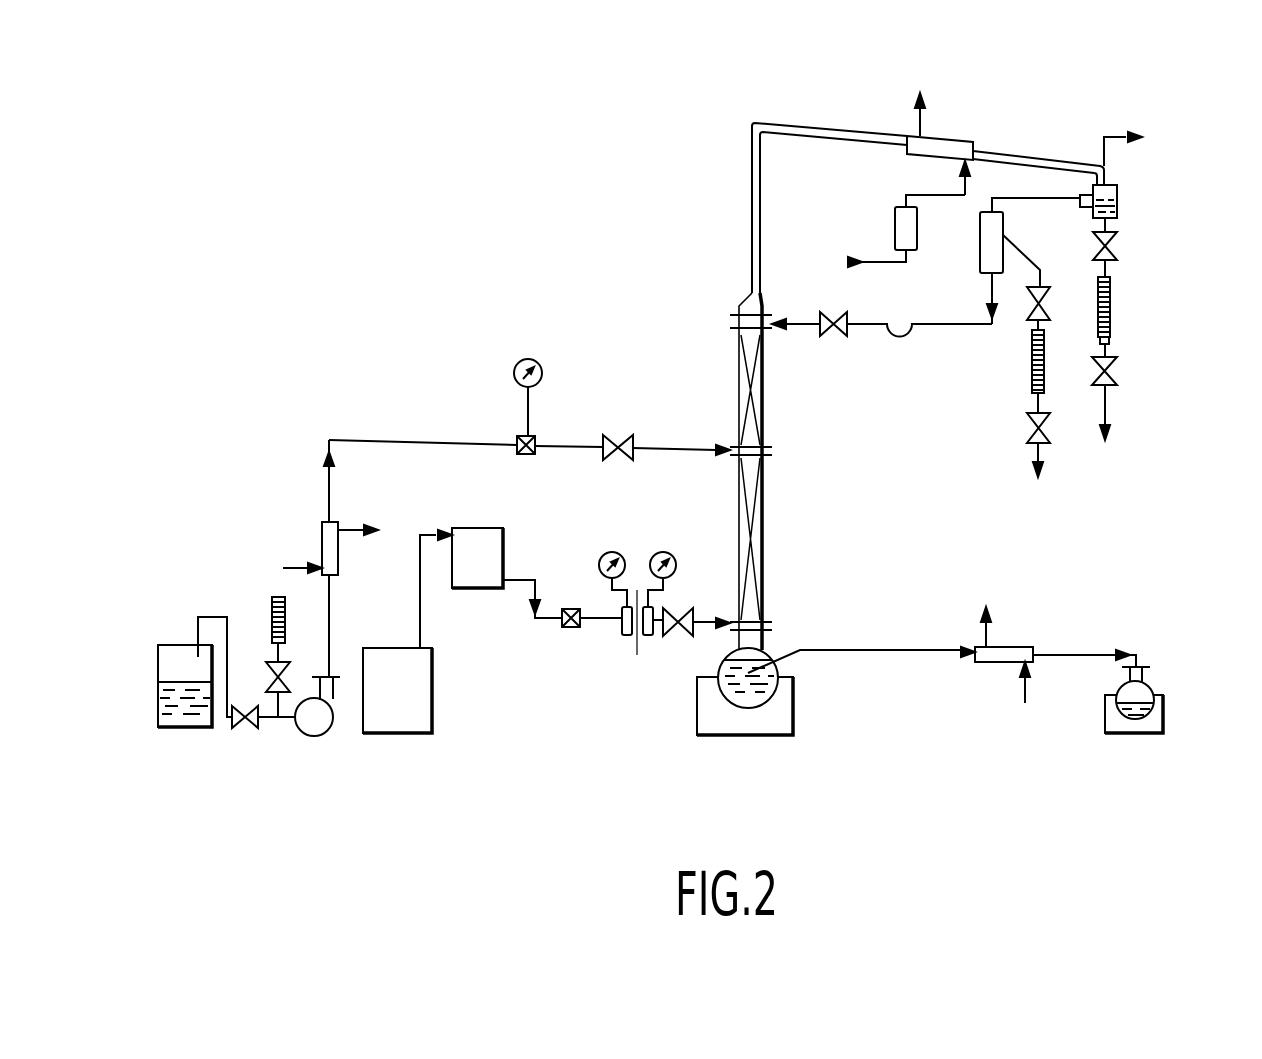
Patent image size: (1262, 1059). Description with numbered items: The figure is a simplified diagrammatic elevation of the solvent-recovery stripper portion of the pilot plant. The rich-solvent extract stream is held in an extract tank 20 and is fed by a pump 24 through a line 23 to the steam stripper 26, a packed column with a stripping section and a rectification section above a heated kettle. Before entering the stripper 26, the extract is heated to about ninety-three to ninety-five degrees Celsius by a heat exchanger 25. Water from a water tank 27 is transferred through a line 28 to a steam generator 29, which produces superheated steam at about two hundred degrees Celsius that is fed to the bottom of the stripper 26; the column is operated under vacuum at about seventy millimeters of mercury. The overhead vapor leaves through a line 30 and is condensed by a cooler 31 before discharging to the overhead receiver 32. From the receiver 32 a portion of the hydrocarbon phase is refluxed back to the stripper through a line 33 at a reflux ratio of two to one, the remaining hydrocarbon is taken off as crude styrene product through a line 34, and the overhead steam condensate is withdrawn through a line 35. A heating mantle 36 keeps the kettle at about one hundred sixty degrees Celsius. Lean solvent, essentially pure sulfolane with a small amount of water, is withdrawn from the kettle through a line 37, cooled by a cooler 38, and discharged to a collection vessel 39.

The extract tank 20 is at (183, 705).
The line 23 is at (214, 616).
The pump 24 is at (316, 737).
The heat exchanger 25 is at (340, 548).
The steam stripper 26 is at (765, 413).
The water tank 27 is at (414, 705).
The line 28 is at (421, 628).
The steam generator 29 is at (494, 568).
The line 30 is at (757, 197).
The cooler 31 is at (907, 138).
The overhead receiver 32 is at (1120, 191).
The line 33 is at (955, 326).
The line 34 is at (1053, 342).
The line 35 is at (1112, 318).
The reboiler heater 36 is at (795, 708).
The line 37 is at (878, 650).
The cooler 38 is at (1032, 648).
The vessel 39 is at (1155, 688).